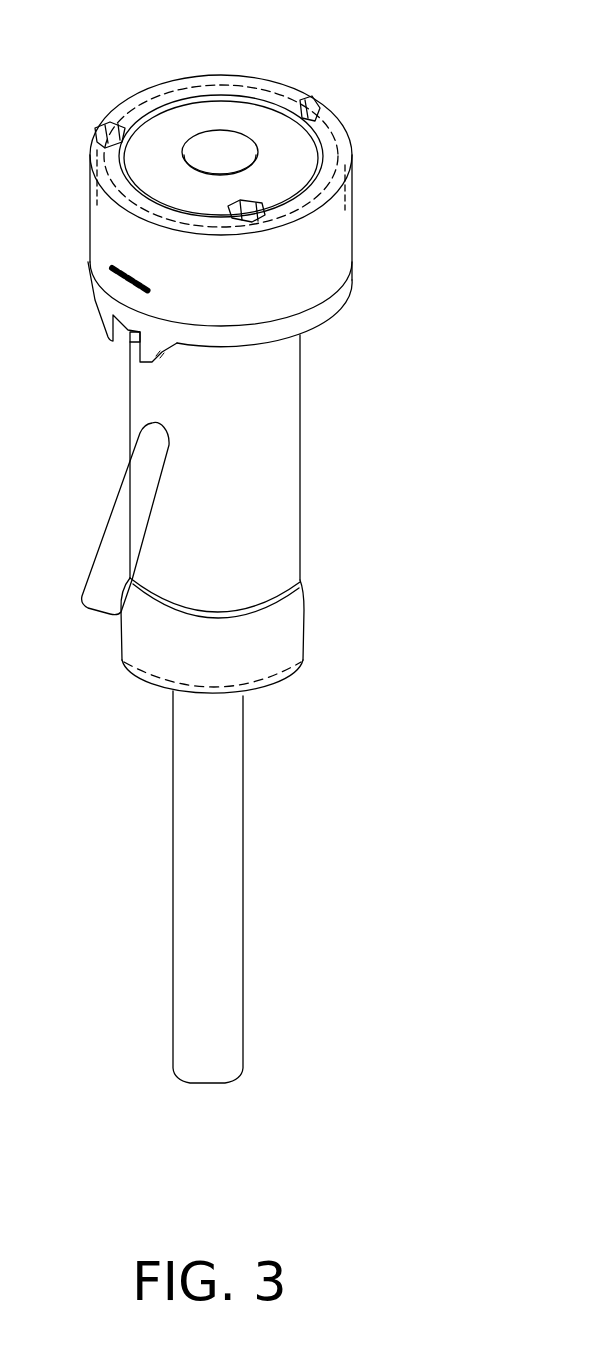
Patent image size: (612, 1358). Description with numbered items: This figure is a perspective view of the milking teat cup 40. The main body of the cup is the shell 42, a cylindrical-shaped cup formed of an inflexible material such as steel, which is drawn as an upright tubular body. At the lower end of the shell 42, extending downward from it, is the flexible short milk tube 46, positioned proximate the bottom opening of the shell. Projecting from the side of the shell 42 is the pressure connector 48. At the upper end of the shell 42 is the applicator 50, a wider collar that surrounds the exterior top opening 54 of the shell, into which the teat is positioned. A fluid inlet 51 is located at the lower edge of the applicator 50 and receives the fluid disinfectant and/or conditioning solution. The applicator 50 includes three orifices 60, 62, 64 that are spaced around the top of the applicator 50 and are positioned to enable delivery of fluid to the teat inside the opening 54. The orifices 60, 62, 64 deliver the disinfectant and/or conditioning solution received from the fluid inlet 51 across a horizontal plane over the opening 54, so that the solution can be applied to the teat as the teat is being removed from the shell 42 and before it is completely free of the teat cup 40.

The milking teat cup 40 is at (527, 63).
The shell 42 is at (301, 442).
The flexible short milk tube 46 is at (173, 842).
The pressure connector 48 is at (110, 520).
The applicator 50 is at (88, 208).
The fluid inlet 51 is at (130, 343).
The exterior top opening 54 is at (184, 150).
The orifice 60 is at (97, 130).
The orifice 62 is at (308, 100).
The orifice 64 is at (255, 203).